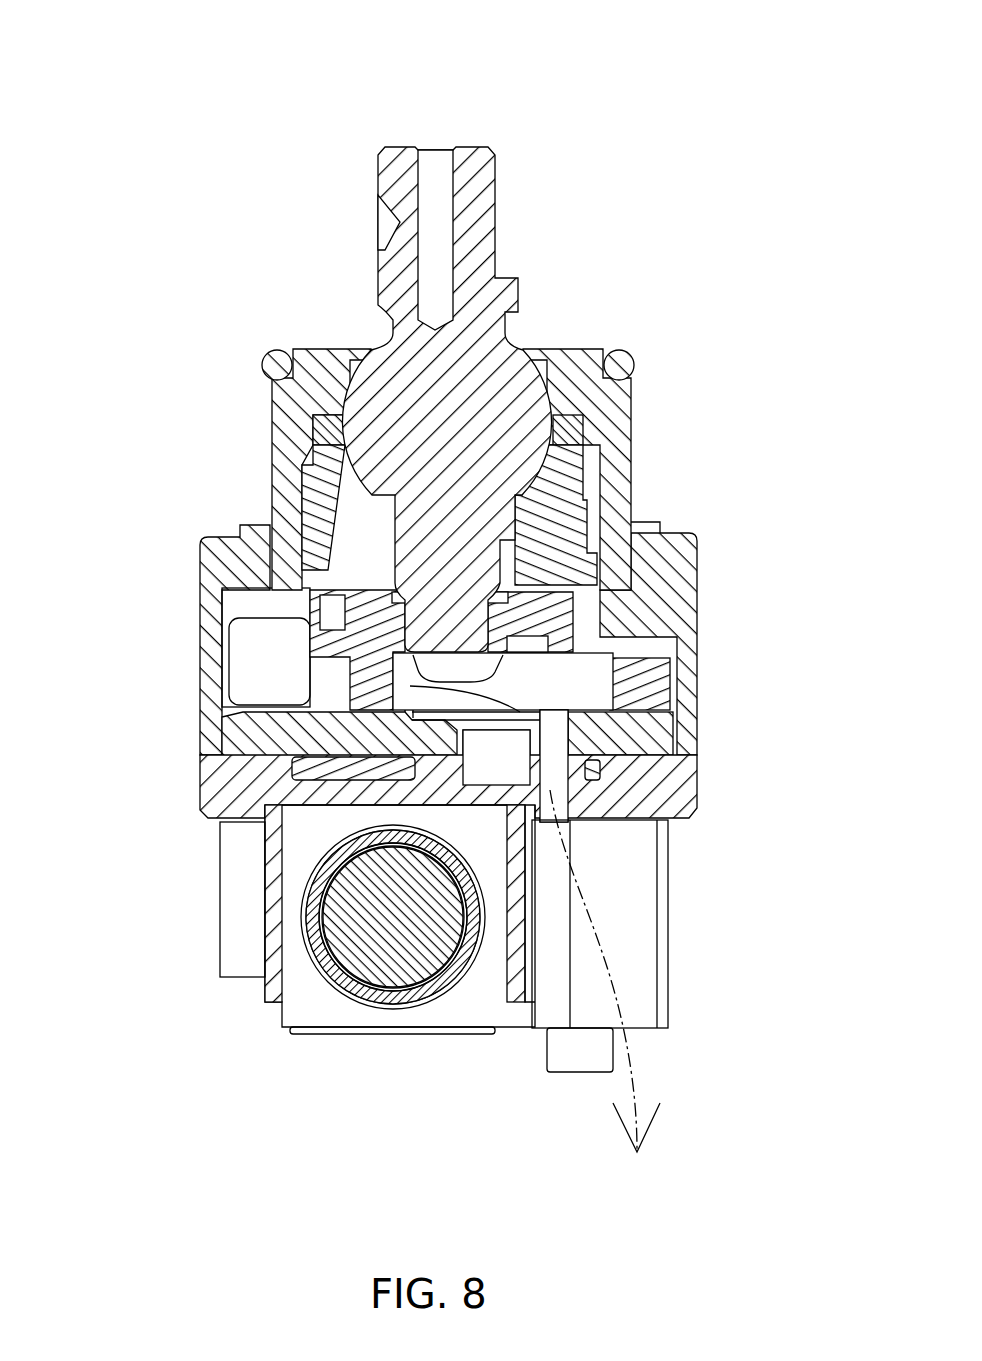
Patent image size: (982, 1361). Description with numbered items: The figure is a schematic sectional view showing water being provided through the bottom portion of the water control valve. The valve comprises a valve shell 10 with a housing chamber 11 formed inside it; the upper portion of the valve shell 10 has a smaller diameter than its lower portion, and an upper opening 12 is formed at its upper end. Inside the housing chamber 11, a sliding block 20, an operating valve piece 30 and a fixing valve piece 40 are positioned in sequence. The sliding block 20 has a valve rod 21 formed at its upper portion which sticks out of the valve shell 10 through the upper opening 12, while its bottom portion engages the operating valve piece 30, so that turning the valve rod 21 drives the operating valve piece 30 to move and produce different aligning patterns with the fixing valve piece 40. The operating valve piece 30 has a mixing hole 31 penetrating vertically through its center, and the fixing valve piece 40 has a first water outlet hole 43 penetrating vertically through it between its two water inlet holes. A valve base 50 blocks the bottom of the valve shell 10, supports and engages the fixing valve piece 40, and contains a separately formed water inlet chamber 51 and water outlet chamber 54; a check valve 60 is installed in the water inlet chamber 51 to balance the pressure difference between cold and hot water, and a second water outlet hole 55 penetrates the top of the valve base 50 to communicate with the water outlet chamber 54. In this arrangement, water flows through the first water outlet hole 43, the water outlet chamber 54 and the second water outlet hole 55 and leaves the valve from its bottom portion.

The valve shell 10 is at (430, 576).
The housing chamber 11 is at (230, 592).
The upper opening 12 is at (350, 349).
The sliding block 20 is at (205, 537).
The valve rod 21 is at (476, 153).
The operating valve piece 30 is at (652, 662).
The mixing hole 31 is at (562, 697).
The fixing valve piece 40 is at (223, 720).
The first water outlet hole 43 is at (600, 778).
The valve base 50 is at (215, 843).
The water inlet chamber 51 is at (250, 927).
The water outlet chamber 54 is at (640, 963).
The second water outlet hole 55 is at (548, 792).
The check valve 60 is at (338, 999).